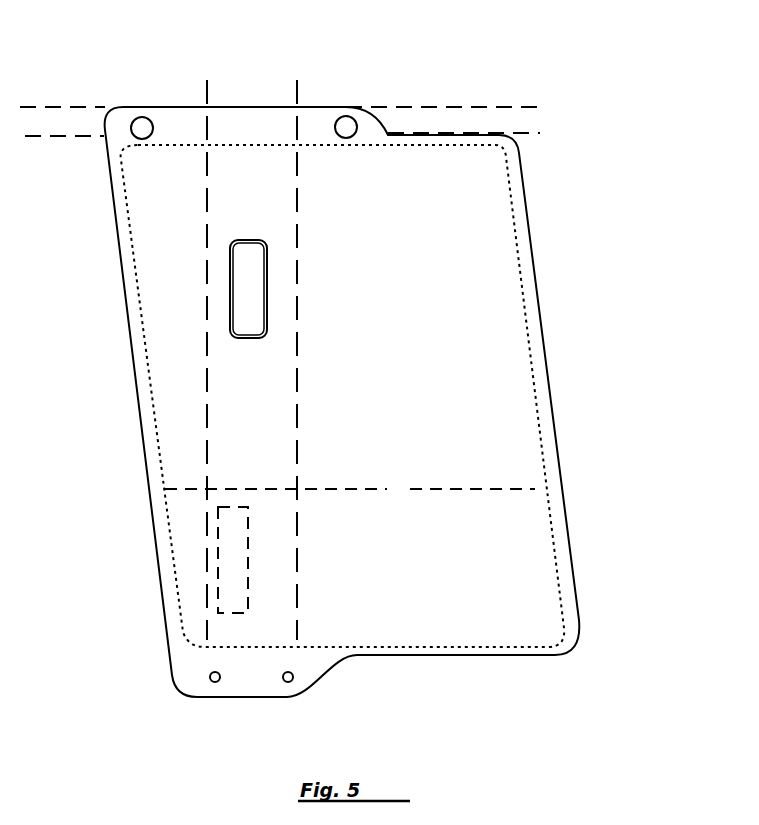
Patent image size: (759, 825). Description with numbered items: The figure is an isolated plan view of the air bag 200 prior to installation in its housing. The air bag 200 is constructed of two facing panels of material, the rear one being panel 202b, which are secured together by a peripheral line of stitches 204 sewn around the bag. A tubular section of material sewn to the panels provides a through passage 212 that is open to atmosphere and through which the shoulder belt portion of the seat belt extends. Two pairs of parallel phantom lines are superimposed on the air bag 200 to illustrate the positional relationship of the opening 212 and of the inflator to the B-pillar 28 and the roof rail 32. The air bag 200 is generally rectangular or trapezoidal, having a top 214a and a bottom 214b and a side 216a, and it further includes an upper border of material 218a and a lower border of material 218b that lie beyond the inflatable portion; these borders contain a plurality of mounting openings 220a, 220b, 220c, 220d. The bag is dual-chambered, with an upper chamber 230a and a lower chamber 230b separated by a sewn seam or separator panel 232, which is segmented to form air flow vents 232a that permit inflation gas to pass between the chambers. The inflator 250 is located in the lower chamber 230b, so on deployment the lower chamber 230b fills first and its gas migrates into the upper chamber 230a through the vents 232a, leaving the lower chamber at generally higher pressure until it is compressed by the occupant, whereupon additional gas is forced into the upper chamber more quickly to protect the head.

The air bag 200 is at (530, 240).
The panel of material 202b is at (518, 447).
The peripheral line of stitches 204 is at (506, 185).
The through passage 212 is at (247, 290).
The top 214a is at (303, 103).
The bottom 214b is at (453, 657).
The side 216a is at (543, 353).
The upper border of material 218a is at (182, 125).
The lower border of material 218b is at (315, 668).
The mounting opening 220a is at (142, 125).
The mounting opening 220b is at (346, 116).
The mounting opening 220c is at (211, 674).
The mounting opening 220d is at (291, 672).
The B-pillar 28 is at (295, 290).
The roof rail 32 is at (453, 115).
The upper chamber 230a is at (429, 296).
The lower chamber 230b is at (465, 591).
The separator panel 232 is at (430, 494).
The air flow vents 232a is at (216, 488).
The inflator 250 is at (236, 553).